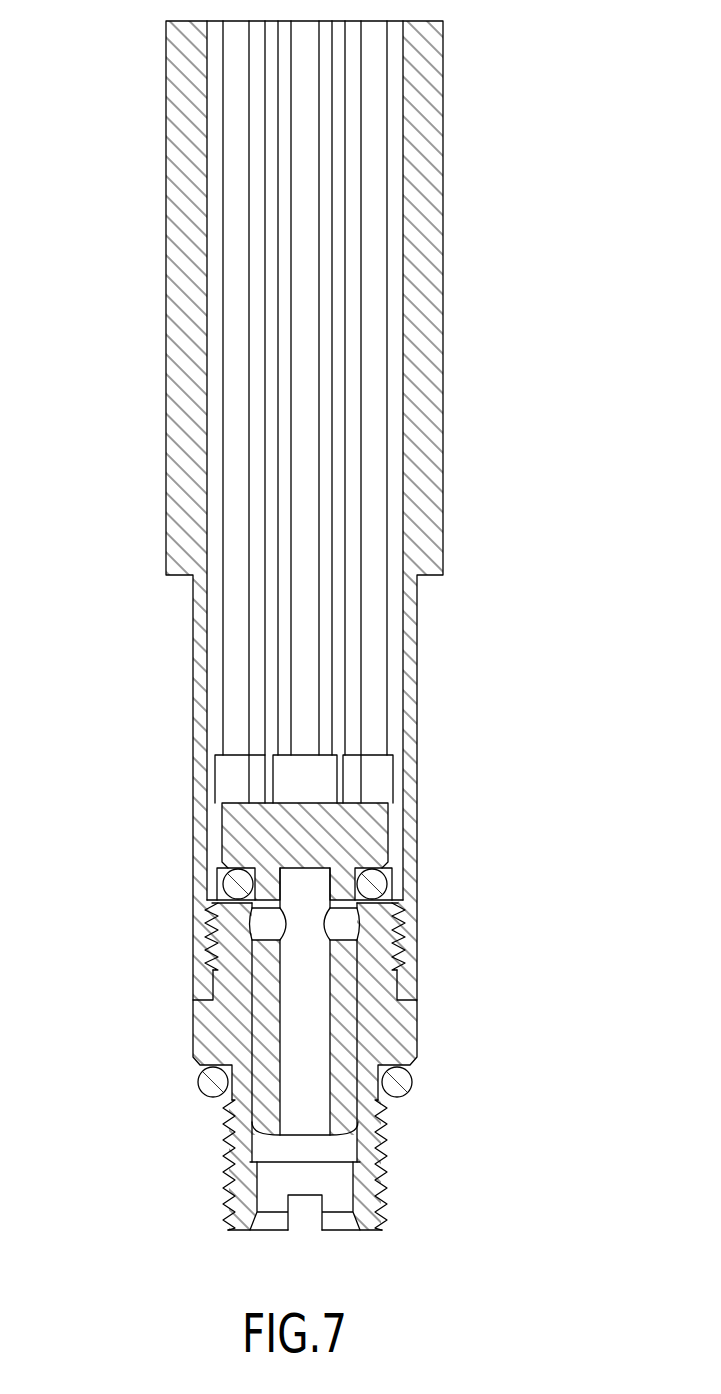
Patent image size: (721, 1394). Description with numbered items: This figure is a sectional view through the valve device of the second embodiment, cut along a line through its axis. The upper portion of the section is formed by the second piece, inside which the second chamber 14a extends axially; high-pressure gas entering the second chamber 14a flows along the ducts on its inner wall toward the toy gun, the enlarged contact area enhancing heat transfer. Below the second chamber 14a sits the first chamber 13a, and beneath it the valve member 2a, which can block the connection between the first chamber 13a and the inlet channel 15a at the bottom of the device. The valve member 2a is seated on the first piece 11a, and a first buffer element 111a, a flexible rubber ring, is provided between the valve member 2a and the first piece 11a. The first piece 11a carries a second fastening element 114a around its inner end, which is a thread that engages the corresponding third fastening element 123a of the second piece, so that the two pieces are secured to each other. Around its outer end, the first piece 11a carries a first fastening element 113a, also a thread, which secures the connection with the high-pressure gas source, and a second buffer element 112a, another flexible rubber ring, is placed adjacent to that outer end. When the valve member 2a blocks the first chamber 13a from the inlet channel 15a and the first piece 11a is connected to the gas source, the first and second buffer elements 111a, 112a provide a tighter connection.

The second chamber 14a is at (370, 530).
The first chamber 13a is at (252, 778).
The valve member 2a is at (232, 830).
The first buffer element 111a is at (387, 887).
The second fastening element 114a is at (407, 918).
The third fastening element 123a is at (402, 958).
The first piece 11a is at (415, 1032).
The second buffer element 112a is at (415, 1078).
The first fastening element 113a is at (383, 1157).
The inlet channel 15a is at (337, 1200).